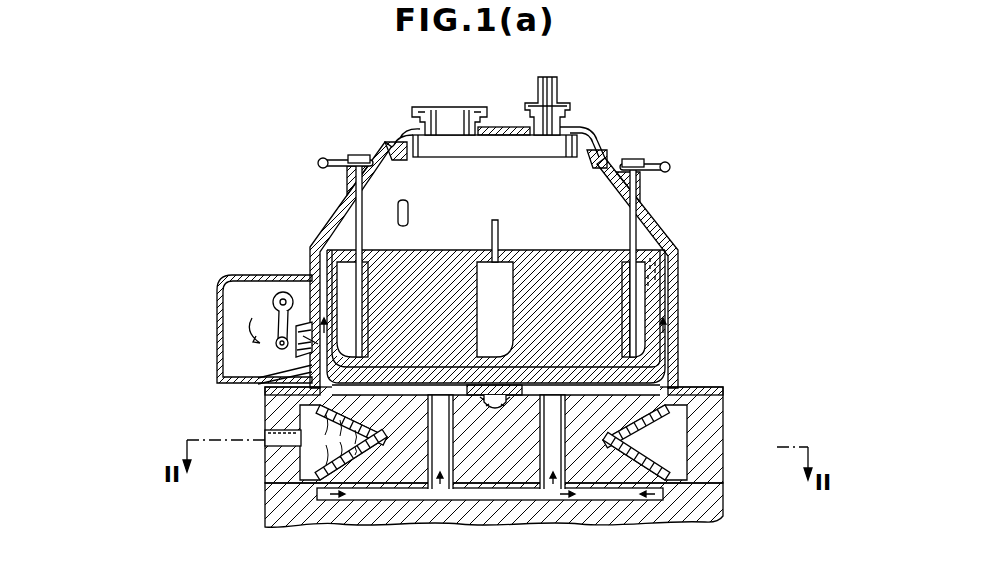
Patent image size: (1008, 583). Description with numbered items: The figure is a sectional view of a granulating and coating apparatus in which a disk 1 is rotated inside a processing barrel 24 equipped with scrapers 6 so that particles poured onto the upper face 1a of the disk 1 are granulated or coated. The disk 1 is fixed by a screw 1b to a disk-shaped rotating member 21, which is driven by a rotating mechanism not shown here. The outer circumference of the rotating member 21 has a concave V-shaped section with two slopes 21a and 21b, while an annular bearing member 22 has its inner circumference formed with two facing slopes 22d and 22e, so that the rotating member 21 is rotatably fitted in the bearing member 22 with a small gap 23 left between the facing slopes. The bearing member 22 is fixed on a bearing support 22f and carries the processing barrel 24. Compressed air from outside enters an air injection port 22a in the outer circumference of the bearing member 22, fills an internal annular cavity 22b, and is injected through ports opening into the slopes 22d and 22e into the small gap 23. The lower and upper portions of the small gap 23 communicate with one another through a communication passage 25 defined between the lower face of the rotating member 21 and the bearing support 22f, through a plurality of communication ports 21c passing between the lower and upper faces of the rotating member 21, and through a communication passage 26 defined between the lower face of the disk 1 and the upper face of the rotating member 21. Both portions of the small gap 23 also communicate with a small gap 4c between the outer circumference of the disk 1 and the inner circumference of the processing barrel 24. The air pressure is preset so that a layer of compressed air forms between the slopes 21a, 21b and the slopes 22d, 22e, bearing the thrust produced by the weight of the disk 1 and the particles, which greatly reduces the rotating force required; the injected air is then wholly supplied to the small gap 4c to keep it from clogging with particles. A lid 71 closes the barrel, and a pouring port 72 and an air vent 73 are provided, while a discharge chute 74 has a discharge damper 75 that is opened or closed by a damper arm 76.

The disk 1 is at (664, 367).
The upper face of the disk 1a is at (603, 357).
The screw 1b is at (490, 420).
The small gap 4c is at (678, 374).
The scrapers 6 is at (640, 193).
The rotating member 21 is at (598, 478).
The slope of the rotating member 21a is at (433, 455).
The slope of the rotating member 21b is at (378, 415).
The communication ports 21c is at (566, 478).
The bearing member 22 is at (725, 416).
The air injection port 22a is at (267, 442).
The annular cavity 22b is at (680, 465).
The slope of the bearing member 22d is at (270, 393).
The slope of the bearing member 22e is at (323, 496).
The bearing support 22f is at (708, 517).
The small gap 23 is at (350, 425).
The processing barrel 24 is at (680, 252).
The communication passage 25 is at (528, 497).
The communication passage 26 is at (370, 372).
The lid 71 is at (592, 143).
The pouring port 72 is at (437, 117).
The air vent 73 is at (557, 88).
The discharge chute 74 is at (220, 326).
The discharge damper 75 is at (293, 350).
The damper arm 76 is at (282, 290).